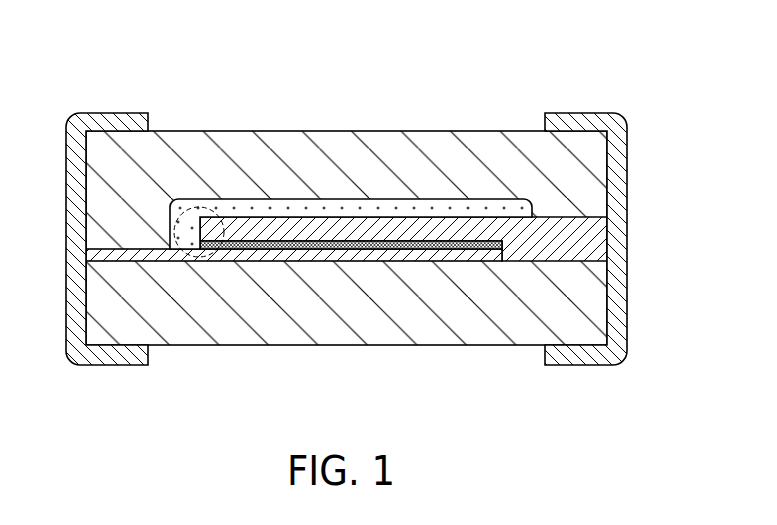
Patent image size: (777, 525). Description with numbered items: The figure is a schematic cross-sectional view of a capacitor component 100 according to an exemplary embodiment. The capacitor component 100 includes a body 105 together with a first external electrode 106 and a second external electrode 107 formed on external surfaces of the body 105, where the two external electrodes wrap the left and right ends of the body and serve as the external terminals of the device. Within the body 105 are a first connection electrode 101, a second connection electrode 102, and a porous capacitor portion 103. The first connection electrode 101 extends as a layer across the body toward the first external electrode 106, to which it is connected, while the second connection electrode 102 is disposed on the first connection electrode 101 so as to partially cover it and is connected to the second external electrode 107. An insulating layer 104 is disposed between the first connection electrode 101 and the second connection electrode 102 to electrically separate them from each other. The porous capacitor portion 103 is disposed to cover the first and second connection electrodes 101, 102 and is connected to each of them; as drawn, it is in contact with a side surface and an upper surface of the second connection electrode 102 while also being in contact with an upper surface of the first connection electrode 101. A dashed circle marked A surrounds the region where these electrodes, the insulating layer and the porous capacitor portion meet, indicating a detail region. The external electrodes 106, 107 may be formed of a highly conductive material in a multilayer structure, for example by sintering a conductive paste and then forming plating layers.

The capacitor component 100 is at (377, 215).
The first connection electrode 101 is at (280, 255).
The second connection electrode 102 is at (590, 238).
The porous capacitor portion 103 is at (382, 210).
The insulating layer 104 is at (440, 241).
The body 105 is at (367, 337).
The first external electrode 106 is at (100, 357).
The second external electrode 107 is at (590, 367).
The enlarged detail region A is at (203, 218).